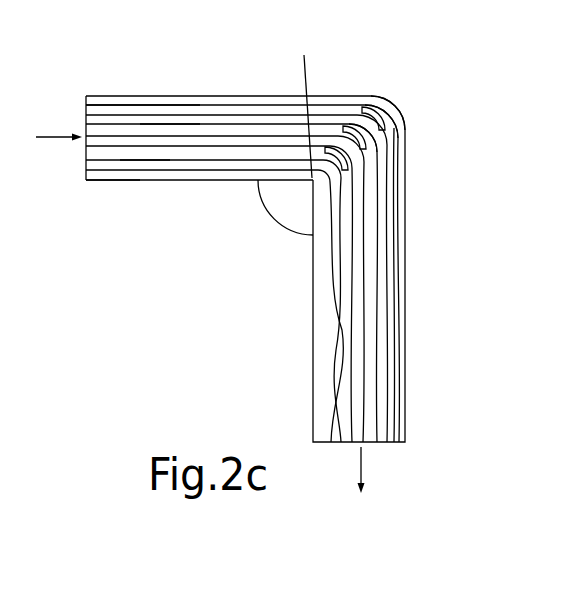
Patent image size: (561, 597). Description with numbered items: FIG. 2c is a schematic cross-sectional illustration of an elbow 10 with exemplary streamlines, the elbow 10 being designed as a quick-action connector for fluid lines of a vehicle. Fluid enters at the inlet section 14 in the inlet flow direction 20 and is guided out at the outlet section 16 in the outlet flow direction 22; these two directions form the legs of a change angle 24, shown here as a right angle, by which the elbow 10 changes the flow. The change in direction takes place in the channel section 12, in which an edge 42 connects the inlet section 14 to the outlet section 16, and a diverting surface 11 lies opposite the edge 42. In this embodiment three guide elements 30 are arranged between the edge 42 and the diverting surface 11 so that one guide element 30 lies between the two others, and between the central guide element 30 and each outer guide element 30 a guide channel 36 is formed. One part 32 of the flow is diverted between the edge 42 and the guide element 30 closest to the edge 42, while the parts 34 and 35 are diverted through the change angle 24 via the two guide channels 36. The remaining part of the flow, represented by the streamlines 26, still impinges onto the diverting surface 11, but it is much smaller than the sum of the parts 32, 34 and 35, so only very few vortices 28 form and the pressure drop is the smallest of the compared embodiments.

The elbow 10 is at (277, 67).
The diverting surface 11 is at (377, 100).
The channel section 12 is at (391, 117).
The inlet section 14 is at (183, 97).
The outlet section 16 is at (410, 384).
The inlet flow direction 20 is at (47, 140).
The outlet flow direction 22 is at (363, 465).
The change angle 24 is at (280, 205).
The streamlines 26 is at (107, 104).
The vortices 28 is at (342, 317).
The guide elements 30 is at (361, 110).
The part of the flow 32 is at (110, 180).
The part of the flow 34 is at (135, 160).
The part of the flow 35 is at (165, 115).
The guide channel 36 is at (375, 136).
The edge 42 is at (304, 97).